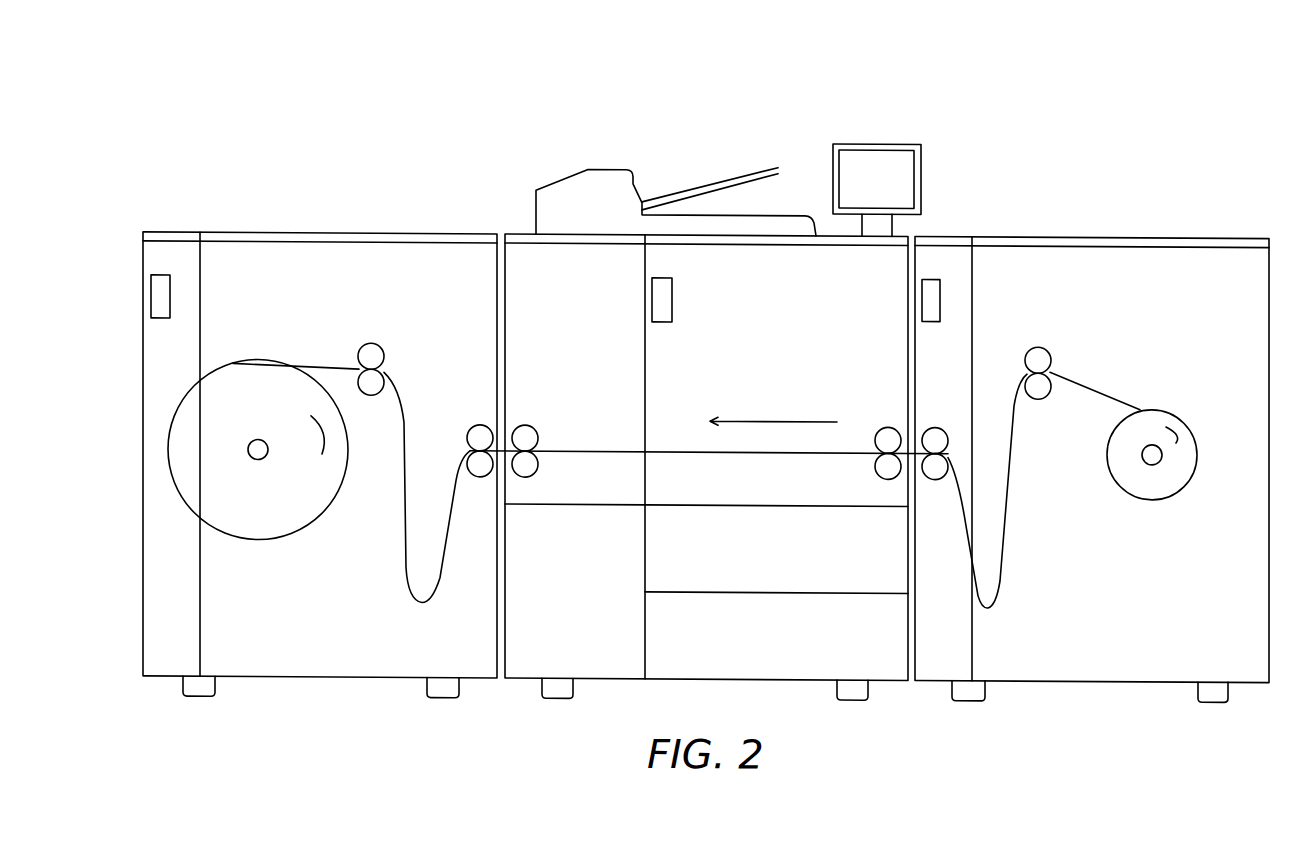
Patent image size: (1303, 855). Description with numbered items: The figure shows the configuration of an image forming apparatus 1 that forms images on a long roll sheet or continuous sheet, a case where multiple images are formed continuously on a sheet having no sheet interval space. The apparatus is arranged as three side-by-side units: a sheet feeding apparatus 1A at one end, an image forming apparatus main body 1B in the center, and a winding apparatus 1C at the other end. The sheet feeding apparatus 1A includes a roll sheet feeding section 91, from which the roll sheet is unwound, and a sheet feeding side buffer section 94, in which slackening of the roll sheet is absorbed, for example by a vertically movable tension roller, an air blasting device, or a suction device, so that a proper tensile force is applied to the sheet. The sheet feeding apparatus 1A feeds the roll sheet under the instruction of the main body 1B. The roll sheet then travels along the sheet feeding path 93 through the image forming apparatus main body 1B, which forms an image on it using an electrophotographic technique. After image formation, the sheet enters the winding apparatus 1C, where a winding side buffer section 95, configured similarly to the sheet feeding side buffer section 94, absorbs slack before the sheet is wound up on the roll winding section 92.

The image forming apparatus 1 is at (965, 94).
The sheet feeding apparatus 1A is at (1116, 202).
The image forming apparatus main body 1B is at (763, 143).
The winding apparatus 1C is at (314, 206).
The roll sheet feeding section 91 is at (1150, 492).
The roll winding section 92 is at (270, 537).
The sheet feeding path 93 is at (681, 447).
The sheet feeding side buffer section 94 is at (1013, 569).
The winding side buffer section 95 is at (404, 576).